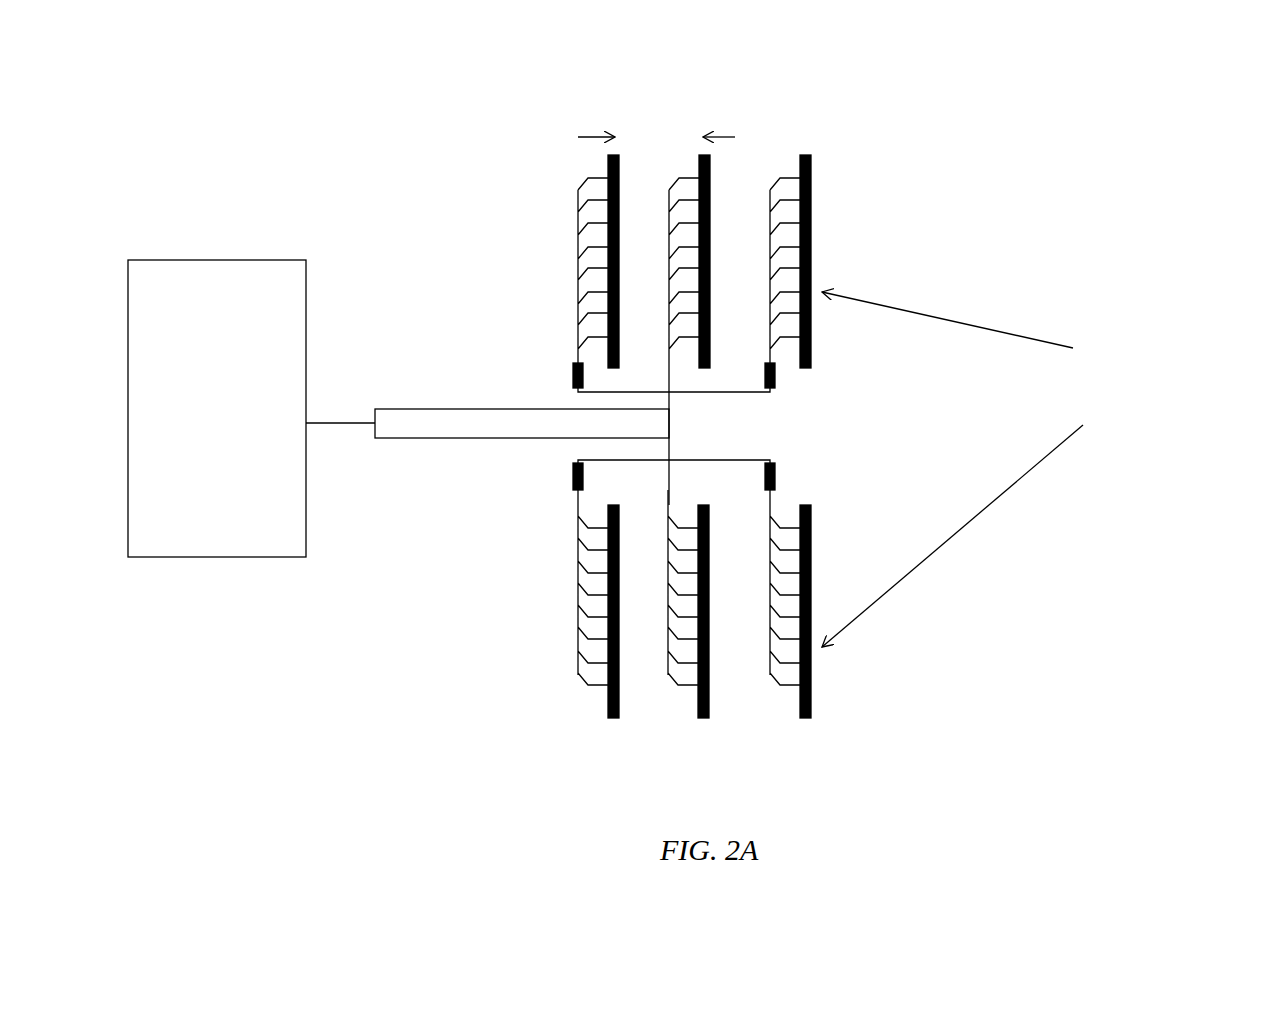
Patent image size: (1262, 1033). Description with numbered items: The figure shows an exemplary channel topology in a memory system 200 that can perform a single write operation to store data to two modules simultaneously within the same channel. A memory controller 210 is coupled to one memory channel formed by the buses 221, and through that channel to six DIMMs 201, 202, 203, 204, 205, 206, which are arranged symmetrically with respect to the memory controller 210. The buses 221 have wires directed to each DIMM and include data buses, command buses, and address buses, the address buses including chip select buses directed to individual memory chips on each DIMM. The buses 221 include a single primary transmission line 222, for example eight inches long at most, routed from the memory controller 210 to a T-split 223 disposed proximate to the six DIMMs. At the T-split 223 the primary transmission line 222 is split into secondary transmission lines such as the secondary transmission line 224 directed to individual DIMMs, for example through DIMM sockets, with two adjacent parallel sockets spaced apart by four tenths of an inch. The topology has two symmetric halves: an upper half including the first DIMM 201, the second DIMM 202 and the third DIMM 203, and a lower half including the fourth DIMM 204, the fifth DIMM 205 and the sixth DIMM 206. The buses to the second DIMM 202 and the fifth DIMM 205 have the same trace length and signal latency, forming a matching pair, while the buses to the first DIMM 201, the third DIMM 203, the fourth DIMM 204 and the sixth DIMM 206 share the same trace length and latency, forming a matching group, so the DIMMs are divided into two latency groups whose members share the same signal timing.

The memory system 200 is at (669, 395).
The DIMM 1 201 is at (811, 203).
The DIMM 2 202 is at (710, 200).
The DIMM 3 203 is at (619, 200).
The DIMM 4 204 is at (619, 672).
The DIMM 5 205 is at (709, 668).
The DIMM 6 206 is at (811, 690).
The memory controller 210 is at (217, 408).
The buses 221 is at (527, 445).
The primary transmission line 222 is at (468, 402).
The T-split 223 is at (573, 434).
The secondary transmission line 224 is at (757, 392).